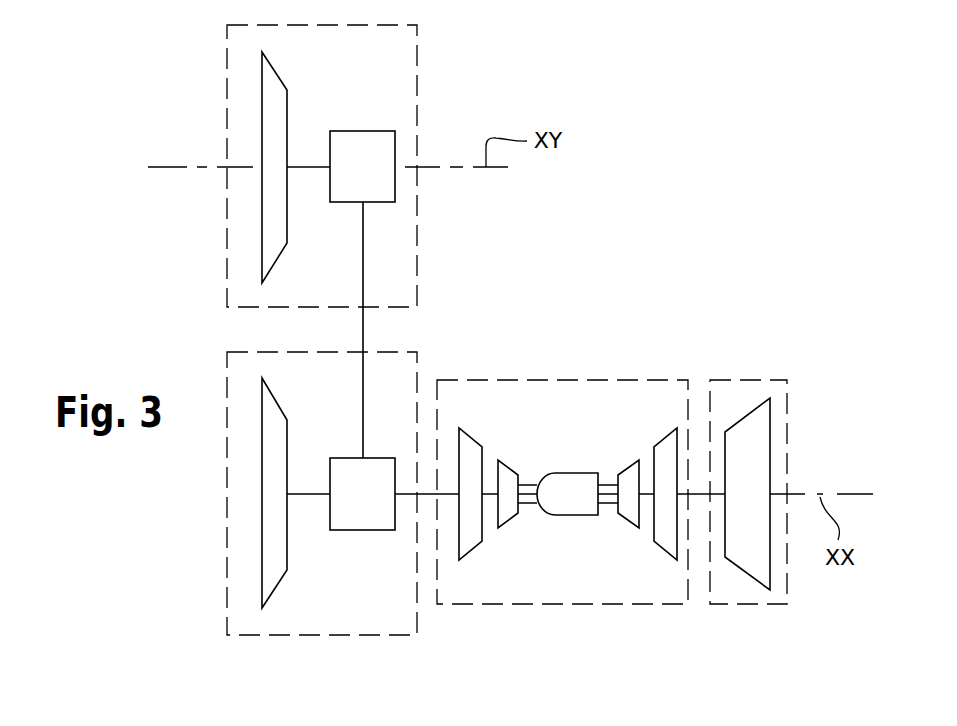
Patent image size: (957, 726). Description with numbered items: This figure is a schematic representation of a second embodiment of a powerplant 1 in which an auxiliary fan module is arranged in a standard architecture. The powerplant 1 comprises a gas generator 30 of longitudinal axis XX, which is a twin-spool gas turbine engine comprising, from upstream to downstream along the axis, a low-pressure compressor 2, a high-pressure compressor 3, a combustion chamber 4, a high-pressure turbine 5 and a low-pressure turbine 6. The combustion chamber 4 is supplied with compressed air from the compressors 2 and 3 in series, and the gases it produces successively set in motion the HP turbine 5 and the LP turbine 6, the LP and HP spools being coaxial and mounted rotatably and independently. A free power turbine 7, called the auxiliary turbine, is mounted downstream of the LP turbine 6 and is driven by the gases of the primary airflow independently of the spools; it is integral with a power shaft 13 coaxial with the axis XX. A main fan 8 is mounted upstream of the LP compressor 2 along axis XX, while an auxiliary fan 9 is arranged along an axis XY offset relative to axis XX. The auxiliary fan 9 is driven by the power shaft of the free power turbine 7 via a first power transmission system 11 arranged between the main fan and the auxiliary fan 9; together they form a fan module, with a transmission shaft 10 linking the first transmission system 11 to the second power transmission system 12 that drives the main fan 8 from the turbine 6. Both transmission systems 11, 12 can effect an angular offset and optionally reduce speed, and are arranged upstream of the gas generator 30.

The powerplant 1 is at (640, 216).
The low-pressure compressor 2 is at (472, 447).
The high-pressure compressor 3 is at (508, 478).
The combustion chamber 4 is at (570, 480).
The high-pressure turbine 5 is at (630, 475).
The low-pressure turbine 6 is at (666, 450).
The free power turbine 7 is at (753, 418).
The main fan 8 is at (270, 565).
The auxiliary fan 9 is at (270, 225).
The transmission shaft 10 is at (372, 332).
The first power transmission system 11 is at (383, 137).
The second power transmission system 12 is at (345, 527).
The power shaft 13 is at (700, 497).
The gas generator 30 is at (599, 563).